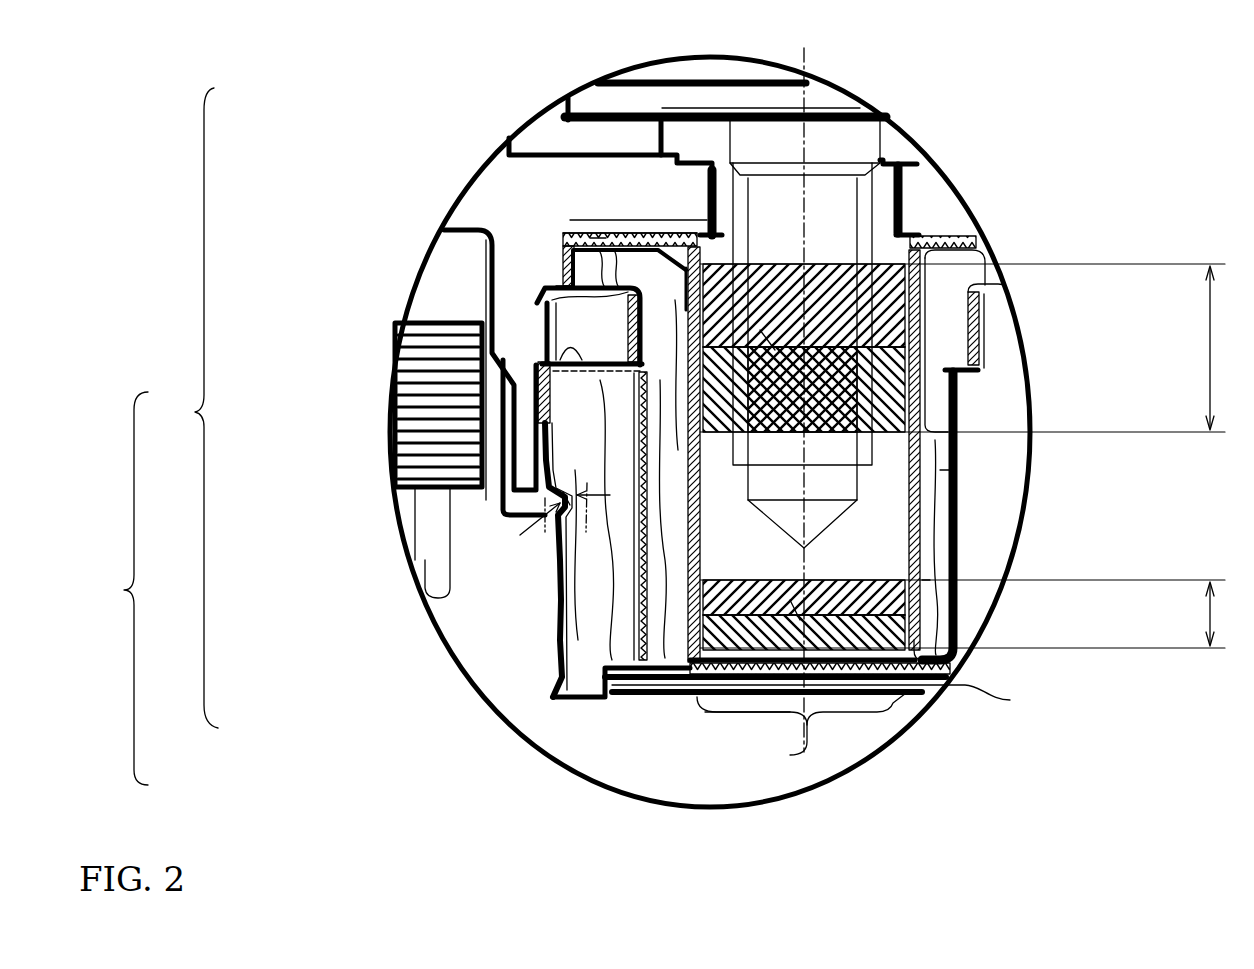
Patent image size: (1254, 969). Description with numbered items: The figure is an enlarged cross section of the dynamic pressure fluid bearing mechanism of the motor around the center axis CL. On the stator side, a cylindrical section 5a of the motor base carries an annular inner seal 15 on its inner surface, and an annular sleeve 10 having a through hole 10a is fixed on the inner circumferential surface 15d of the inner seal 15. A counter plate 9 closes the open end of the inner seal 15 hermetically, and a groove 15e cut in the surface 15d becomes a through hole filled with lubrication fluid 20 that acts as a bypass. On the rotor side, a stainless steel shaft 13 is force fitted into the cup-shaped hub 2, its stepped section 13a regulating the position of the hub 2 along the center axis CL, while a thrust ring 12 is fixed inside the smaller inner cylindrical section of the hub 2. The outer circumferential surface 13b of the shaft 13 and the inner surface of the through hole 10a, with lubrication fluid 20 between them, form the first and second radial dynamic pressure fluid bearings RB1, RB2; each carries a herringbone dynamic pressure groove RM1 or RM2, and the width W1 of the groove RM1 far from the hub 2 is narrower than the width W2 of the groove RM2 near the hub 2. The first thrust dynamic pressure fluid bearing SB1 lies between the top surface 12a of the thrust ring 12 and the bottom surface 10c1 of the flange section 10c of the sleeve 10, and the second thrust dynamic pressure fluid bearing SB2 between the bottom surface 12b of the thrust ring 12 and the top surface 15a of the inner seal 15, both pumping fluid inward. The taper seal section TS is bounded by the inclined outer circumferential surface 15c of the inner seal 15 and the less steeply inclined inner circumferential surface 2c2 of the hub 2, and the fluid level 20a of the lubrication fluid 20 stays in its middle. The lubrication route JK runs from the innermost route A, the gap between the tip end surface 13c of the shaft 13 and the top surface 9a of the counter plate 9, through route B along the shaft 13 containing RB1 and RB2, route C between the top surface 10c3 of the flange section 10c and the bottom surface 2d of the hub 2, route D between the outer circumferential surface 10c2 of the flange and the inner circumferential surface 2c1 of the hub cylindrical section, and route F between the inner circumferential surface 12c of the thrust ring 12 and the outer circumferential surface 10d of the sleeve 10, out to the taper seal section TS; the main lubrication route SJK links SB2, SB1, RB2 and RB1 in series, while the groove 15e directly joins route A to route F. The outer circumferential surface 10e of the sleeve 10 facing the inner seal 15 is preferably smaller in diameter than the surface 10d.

The hub 2 is at (918, 228).
The inner circumferential surface of the cylindrical section 2c1 is at (552, 257).
The inner circumferential surface of the inner cylindrical section 2c2 is at (545, 422).
The bottom surface of the hub 2d is at (940, 242).
The cylindrical section 5a is at (470, 575).
The counter plate 9 is at (930, 683).
The top surface of the counter plate 9a is at (930, 728).
The sleeve 10 is at (960, 628).
The through hole 10a is at (672, 565).
The flange section 10c is at (957, 276).
The bottom surface of the flange section 10c1 is at (590, 222).
The outer circumferential surface of the flange section 10c2 is at (583, 238).
The top surface of the flange section 10c3 is at (938, 258).
The outer circumferential surface of the sleeve 10d is at (540, 297).
The outer circumferential surface of the sleeve 10e is at (660, 152).
The thrust ring 12 is at (995, 332).
The top surface of the thrust ring 12a is at (545, 318).
The bottom surface of the thrust ring 12b is at (625, 315).
The inner circumferential surface of the thrust ring 12c is at (545, 347).
The shaft 13 is at (880, 165).
The stepped section 13a is at (905, 200).
The outer circumferential surface of the shaft 13b is at (918, 465).
The tip end surface of the shaft 13c is at (912, 580).
The inner seal 15 is at (565, 680).
The top surface of the inner seal 15a is at (978, 374).
The outer circumferential surface of the inner seal 15c is at (627, 313).
The inner circumferential surface of the inner seal 15d is at (962, 458).
The groove 15e is at (613, 640).
The lubrication fluid 20 is at (722, 655).
The fluid level 20a is at (560, 500).
The innermost route A is at (790, 755).
The route B is at (555, 692).
The route C is at (603, 220).
The route D is at (537, 275).
The route F is at (640, 220).
The center axis CL is at (801, 386).
The lubrication route JK is at (114, 601).
The main lubrication route SJK is at (188, 421).
The first thrust dynamic pressure fluid bearing SB1 is at (575, 222).
The second thrust dynamic pressure fluid bearing SB2 is at (640, 372).
The taper seal section TS is at (505, 545).
The first radial dynamic pressure fluid bearing RB1 is at (990, 610).
The second radial dynamic pressure fluid bearing RB2 is at (1008, 357).
The dynamic pressure groove RM1 is at (805, 612).
The dynamic pressure groove RM2 is at (768, 345).
The width of the dynamic pressure groove RM1 W1 is at (963, 614).
The width of the dynamic pressure groove RM2 W2 is at (963, 348).